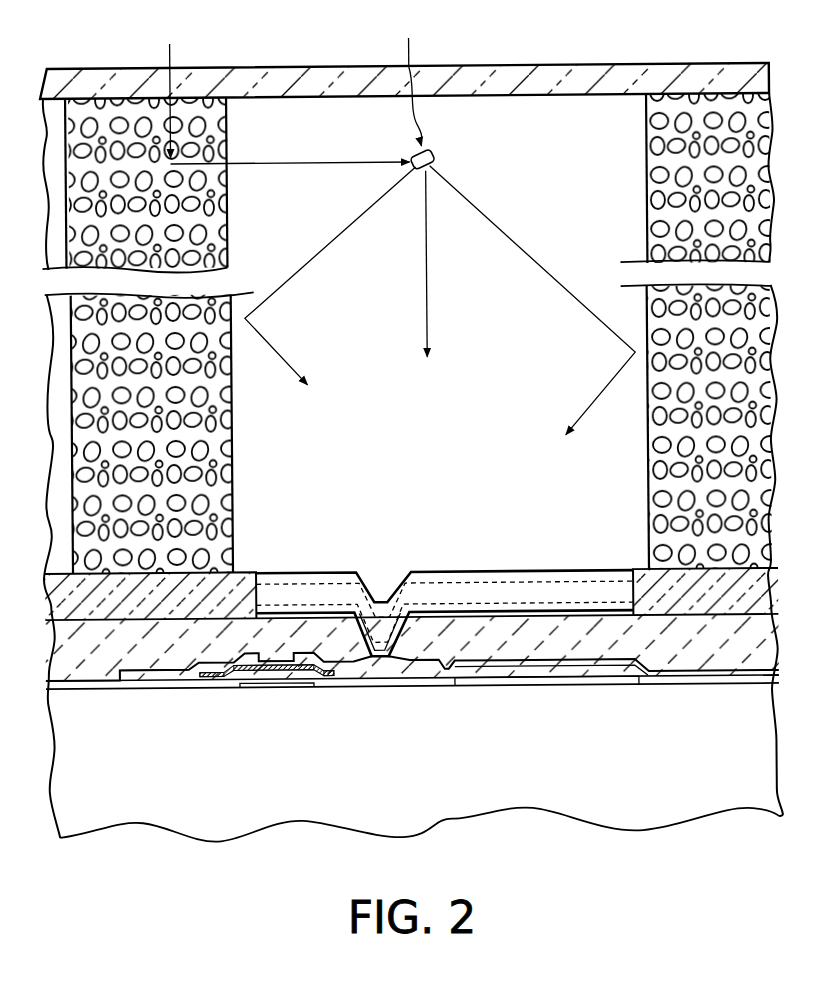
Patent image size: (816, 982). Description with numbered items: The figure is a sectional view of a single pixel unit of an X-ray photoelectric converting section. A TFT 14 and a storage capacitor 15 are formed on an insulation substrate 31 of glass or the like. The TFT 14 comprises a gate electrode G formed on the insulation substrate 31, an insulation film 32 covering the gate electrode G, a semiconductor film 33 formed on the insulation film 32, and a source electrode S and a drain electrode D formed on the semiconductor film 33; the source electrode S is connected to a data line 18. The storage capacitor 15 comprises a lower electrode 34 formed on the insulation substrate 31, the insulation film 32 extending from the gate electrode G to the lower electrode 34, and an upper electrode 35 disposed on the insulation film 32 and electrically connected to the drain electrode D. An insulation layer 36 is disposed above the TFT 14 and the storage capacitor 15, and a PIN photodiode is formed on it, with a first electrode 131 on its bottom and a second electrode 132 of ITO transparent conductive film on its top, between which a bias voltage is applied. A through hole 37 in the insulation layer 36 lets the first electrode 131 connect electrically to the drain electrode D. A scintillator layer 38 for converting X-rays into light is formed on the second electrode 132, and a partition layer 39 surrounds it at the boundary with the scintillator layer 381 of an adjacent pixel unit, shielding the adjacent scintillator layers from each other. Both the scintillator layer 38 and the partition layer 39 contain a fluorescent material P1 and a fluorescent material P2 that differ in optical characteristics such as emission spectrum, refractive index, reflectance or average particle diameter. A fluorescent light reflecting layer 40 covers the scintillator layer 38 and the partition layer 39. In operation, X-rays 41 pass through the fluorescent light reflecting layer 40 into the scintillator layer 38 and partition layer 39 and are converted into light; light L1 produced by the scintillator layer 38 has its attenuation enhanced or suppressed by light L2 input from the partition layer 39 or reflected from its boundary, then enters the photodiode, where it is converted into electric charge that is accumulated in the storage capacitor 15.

The scintillator layer of an adjacent pixel unit 381 is at (55, 108).
The X-rays 41 is at (173, 58).
The partition layer 39 is at (228, 103).
The fluorescent light reflecting layer 40 is at (481, 78).
The scintillator layer 38 is at (551, 113).
The fluorescent material II P2 is at (229, 139).
The fluorescent material I P1 is at (445, 158).
The light L2 is at (274, 168).
The light L1 is at (430, 292).
The insulation layer 36 is at (473, 580).
The second electrode 132 is at (528, 572).
The semiconductor film 33 is at (278, 661).
The through hole 37 is at (382, 636).
The first electrode 131 is at (590, 618).
The data line 18 is at (129, 680).
The source electrode S is at (222, 682).
The gate electrode G is at (280, 684).
The drain electrode D is at (326, 684).
The insulation film 32 is at (385, 690).
The TFT 14 is at (250, 703).
The storage capacitor 15 is at (500, 703).
The upper electrode 35 is at (545, 670).
The lower electrode 34 is at (594, 688).
The insulation substrate 31 is at (677, 812).